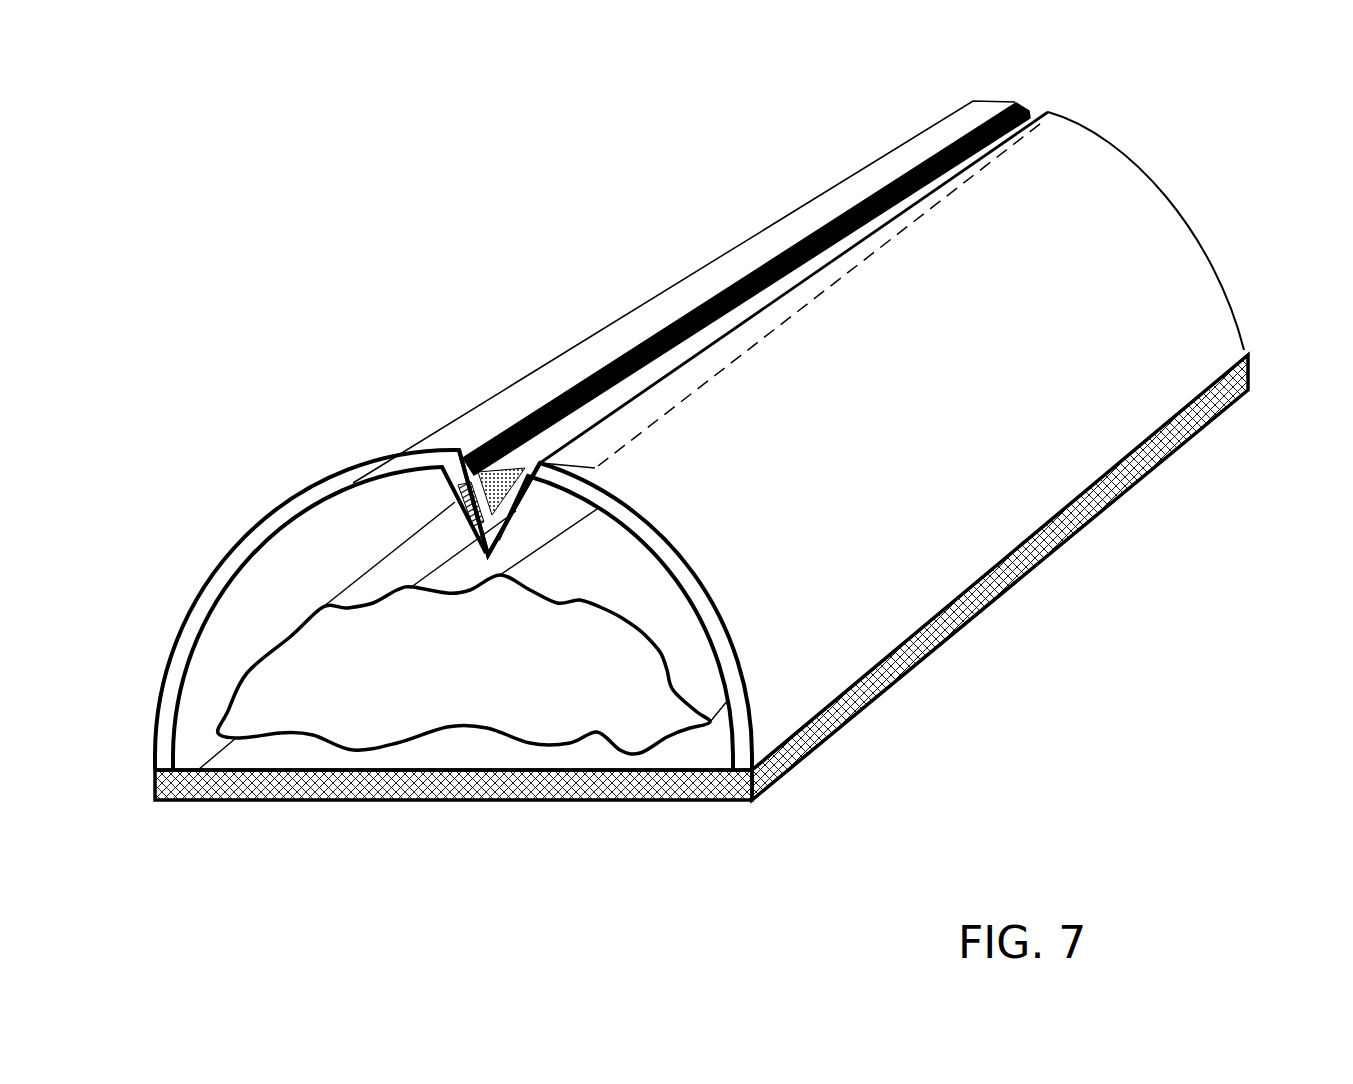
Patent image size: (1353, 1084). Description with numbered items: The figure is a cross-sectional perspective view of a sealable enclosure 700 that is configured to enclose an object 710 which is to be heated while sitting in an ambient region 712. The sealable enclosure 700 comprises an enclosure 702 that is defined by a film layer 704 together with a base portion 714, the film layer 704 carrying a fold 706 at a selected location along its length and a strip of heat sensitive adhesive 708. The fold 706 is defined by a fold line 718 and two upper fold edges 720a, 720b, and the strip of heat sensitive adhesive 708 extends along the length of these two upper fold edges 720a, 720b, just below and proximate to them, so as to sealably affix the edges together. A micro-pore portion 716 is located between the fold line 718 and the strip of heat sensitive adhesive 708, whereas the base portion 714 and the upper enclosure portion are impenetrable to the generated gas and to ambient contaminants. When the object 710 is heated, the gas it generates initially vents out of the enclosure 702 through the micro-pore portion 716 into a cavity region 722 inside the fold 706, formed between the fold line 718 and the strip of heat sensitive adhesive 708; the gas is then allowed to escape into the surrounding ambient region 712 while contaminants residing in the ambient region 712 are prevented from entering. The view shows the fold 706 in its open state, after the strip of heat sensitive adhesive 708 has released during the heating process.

The sealable enclosure 700 is at (701, 479).
The enclosure 702 is at (701, 637).
The film layer 704 is at (699, 441).
The fold 706 is at (729, 282).
The strip of heat sensitive adhesive 708 is at (634, 346).
The object 710 is at (460, 681).
The ambient region 712 is at (336, 160).
The base portion 714 is at (271, 789).
The micro-pore portion 716 is at (452, 503).
The fold line 718 is at (727, 376).
The upper fold edge 720a is at (459, 455).
The upper fold edge 720b is at (546, 468).
The cavity region 722 is at (520, 541).